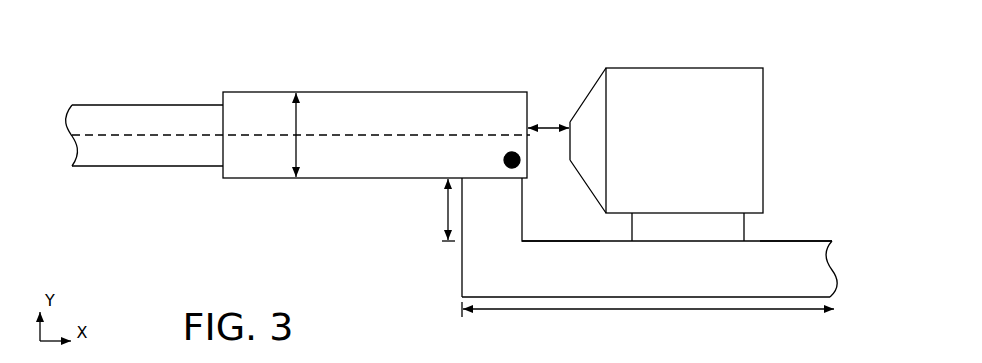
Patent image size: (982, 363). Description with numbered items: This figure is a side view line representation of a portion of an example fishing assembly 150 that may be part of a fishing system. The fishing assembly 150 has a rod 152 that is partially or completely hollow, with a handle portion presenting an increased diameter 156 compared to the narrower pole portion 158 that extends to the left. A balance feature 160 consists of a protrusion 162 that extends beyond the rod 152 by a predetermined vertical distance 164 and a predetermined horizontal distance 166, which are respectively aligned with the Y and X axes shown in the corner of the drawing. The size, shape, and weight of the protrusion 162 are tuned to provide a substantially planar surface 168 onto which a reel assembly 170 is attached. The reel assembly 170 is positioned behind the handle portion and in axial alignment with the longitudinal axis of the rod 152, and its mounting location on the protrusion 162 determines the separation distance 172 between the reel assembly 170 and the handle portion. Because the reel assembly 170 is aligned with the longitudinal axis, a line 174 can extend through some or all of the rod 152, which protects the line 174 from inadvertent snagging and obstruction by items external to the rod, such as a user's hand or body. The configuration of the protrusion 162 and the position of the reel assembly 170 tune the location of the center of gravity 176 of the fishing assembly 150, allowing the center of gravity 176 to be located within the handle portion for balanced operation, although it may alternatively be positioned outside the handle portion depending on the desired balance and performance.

The fishing assembly 150 is at (140, 48).
The rod 152 is at (223, 199).
The increased diameter 156 is at (271, 92).
The pole portion 158 is at (132, 105).
The balance feature 160 is at (446, 271).
The protrusion 162 is at (628, 278).
The vertical distance 164 is at (432, 210).
The horizontal distance 166 is at (648, 318).
The planar surface 168 is at (783, 240).
The reel assembly 170 is at (700, 152).
The separation distance 172 is at (548, 115).
The line 174 is at (377, 133).
The center of gravity 176 is at (503, 158).